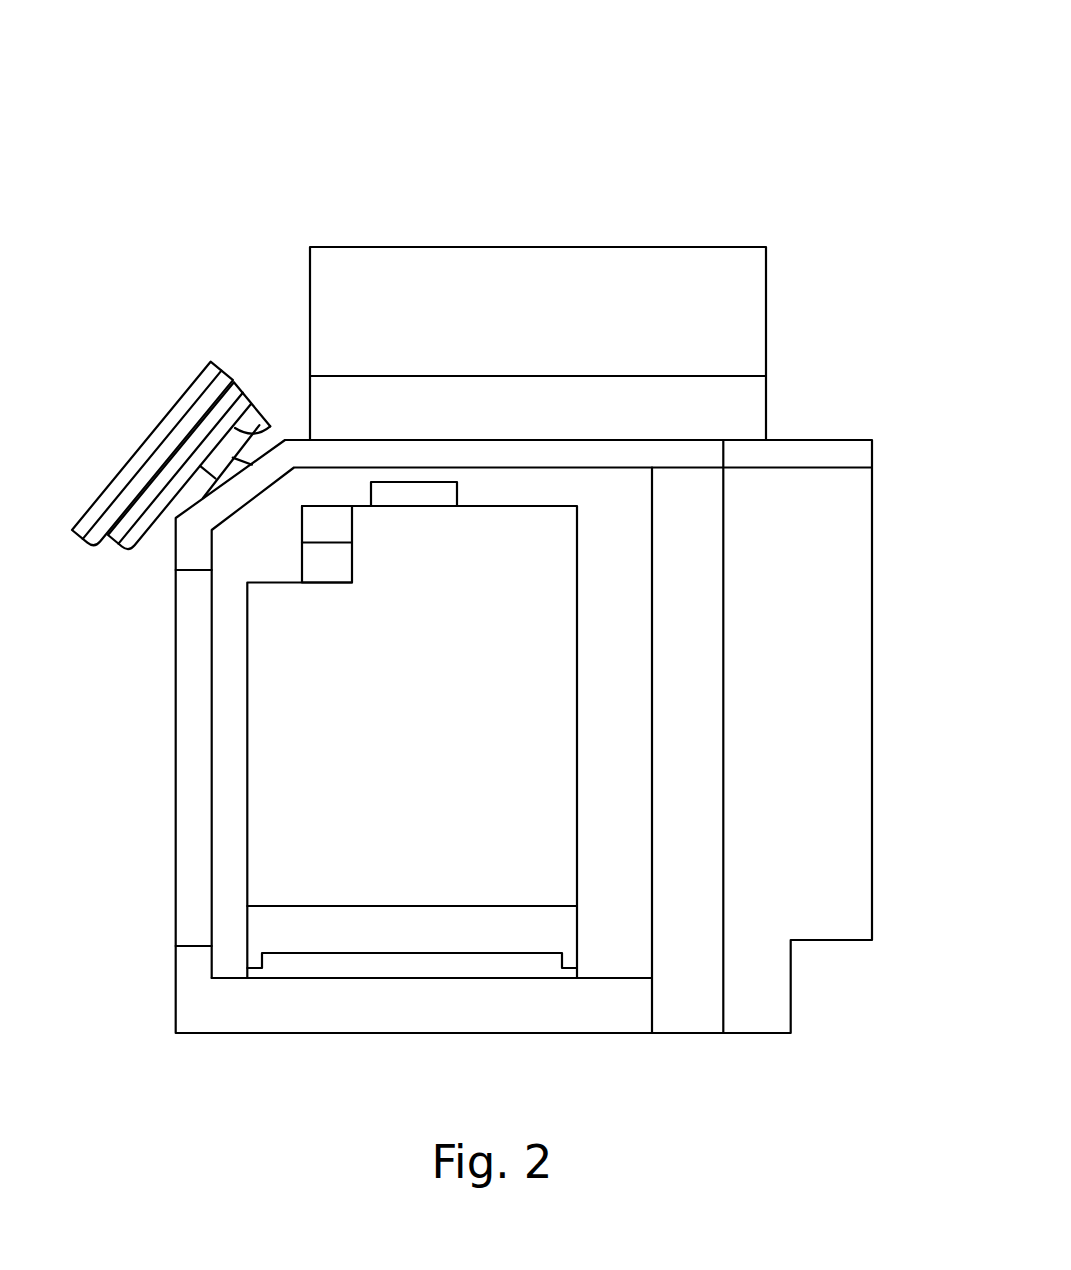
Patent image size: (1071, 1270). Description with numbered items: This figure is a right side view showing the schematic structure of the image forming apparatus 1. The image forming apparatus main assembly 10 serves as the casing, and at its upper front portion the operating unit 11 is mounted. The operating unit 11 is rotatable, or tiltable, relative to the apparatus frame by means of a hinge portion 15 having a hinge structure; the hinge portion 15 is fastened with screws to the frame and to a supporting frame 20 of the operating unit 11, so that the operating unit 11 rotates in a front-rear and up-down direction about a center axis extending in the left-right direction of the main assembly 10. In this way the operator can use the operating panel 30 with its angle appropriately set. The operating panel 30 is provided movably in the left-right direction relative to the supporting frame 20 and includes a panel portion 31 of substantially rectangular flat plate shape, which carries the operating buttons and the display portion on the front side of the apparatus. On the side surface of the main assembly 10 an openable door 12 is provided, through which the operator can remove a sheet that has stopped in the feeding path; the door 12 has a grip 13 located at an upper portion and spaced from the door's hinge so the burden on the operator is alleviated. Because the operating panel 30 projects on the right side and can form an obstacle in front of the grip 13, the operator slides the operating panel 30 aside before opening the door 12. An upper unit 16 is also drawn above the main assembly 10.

The image forming apparatus 1 is at (672, 98).
The image forming apparatus main assembly 10 is at (153, 877).
The operating unit 11 is at (151, 538).
The door 12 is at (220, 773).
The grip 13 is at (343, 525).
The hinge portion 15 is at (263, 422).
The display unit 16 is at (740, 218).
The supporting frame 20 is at (129, 556).
The operating panel 30 is at (134, 505).
The panel portion 31 is at (120, 473).